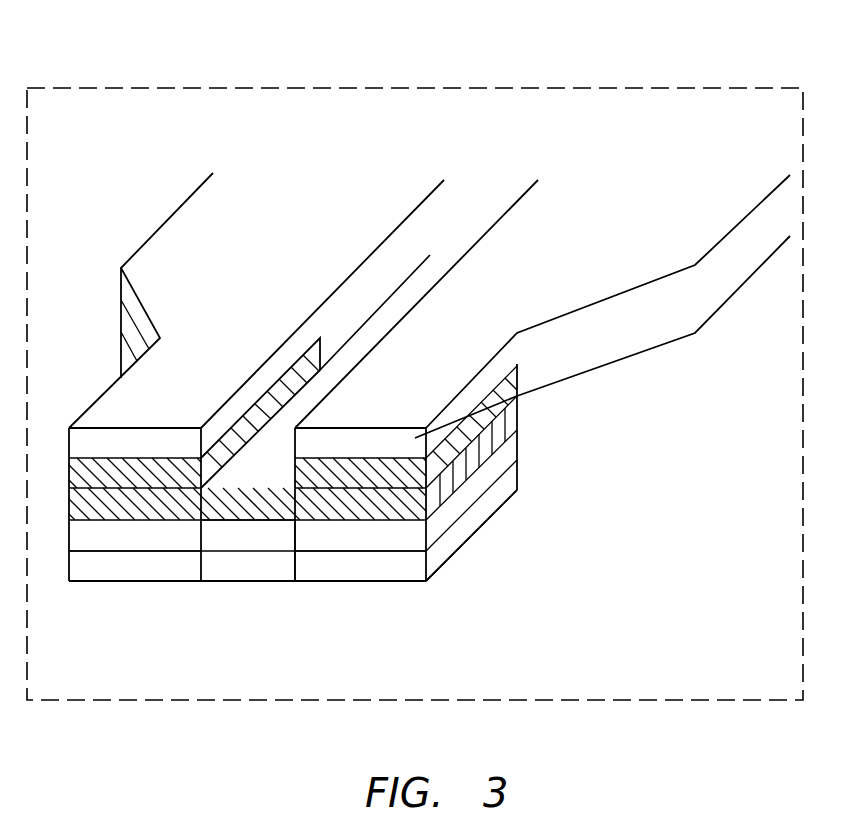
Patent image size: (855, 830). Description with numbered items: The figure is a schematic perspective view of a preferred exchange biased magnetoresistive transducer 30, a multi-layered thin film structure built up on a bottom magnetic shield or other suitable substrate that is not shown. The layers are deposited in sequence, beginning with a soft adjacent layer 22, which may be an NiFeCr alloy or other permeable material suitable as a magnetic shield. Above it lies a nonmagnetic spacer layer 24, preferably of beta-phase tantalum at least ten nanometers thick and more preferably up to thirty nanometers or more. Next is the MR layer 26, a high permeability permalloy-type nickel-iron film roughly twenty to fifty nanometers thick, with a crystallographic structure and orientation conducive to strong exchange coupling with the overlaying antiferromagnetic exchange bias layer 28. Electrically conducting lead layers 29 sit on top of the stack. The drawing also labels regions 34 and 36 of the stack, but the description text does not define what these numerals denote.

The magnetoresistive transducer 30 is at (495, 78).
The electrically conducting lead layers 29 is at (441, 433).
The exchange bias layer 28 is at (395, 470).
The MR layer 26 is at (462, 490).
The nonmagnetic spacer layer 24 is at (417, 537).
The soft adjacent layer 22 is at (420, 567).
The trench region 34 is at (247, 572).
The raised sections 36 is at (348, 568).